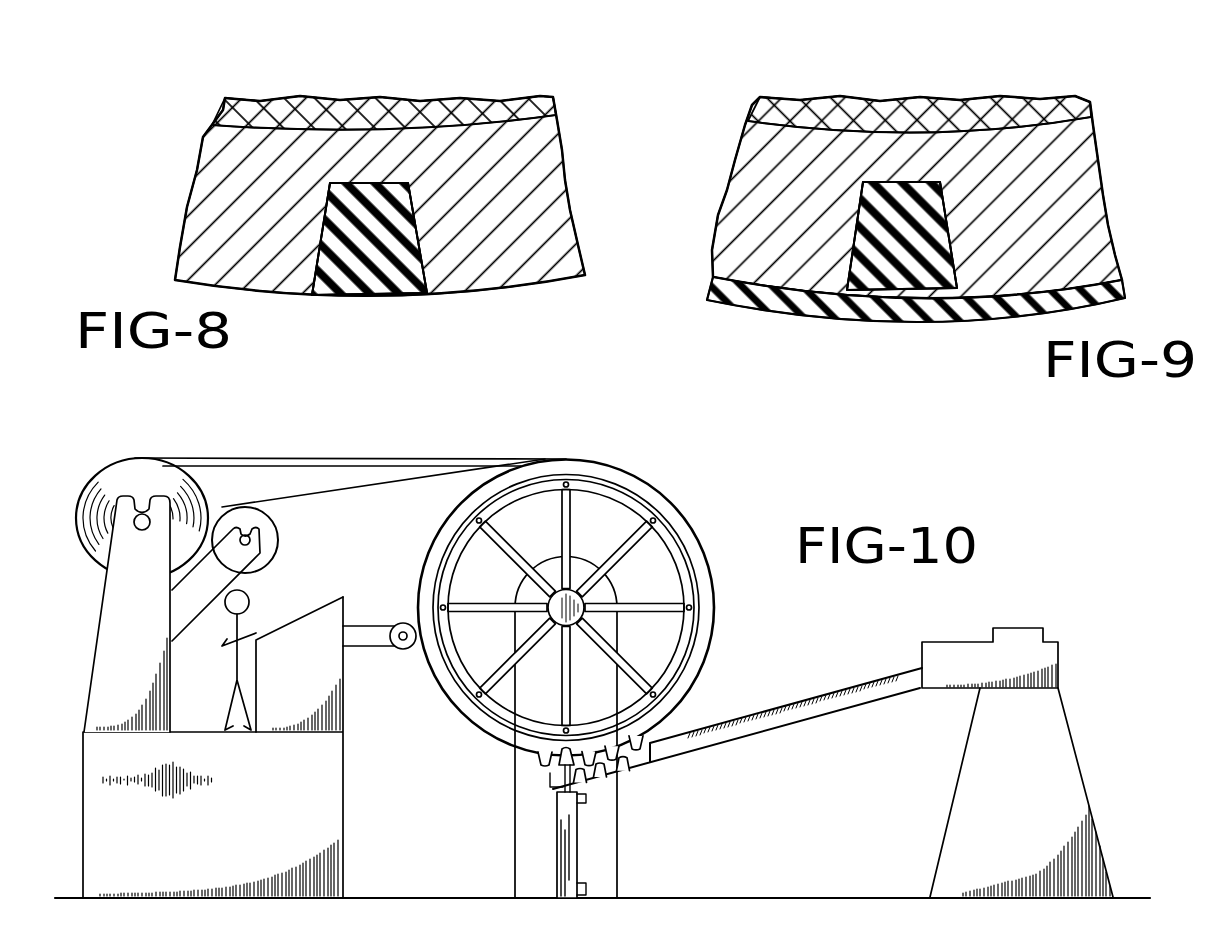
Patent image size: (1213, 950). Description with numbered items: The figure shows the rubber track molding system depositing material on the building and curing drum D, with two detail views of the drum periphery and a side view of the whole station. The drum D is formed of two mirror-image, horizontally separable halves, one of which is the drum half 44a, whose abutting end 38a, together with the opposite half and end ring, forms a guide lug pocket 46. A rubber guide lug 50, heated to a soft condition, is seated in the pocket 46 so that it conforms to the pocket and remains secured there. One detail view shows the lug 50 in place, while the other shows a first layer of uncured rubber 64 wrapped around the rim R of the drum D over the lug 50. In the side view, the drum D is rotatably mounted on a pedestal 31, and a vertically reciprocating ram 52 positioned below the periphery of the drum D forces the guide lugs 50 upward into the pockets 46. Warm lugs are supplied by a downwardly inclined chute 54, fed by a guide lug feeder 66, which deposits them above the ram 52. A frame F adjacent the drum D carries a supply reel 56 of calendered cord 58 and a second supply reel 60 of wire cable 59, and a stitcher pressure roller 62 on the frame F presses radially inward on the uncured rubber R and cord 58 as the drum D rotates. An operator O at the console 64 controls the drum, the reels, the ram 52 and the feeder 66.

In FIG. 9, the abutting end 38a is at (783, 115).
In FIG. 8, the drum half 44a is at (505, 177).
In FIG. 9, the drum half 44a is at (1047, 178).
In FIG. 8, the guide lug pocket 46 is at (420, 268).
In FIG. 9, the guide lug pocket 46 is at (947, 270).
In FIG. 10, the guide lug pocket 46 is at (606, 746).
In FIG. 8, the guide lug 50 is at (337, 281).
In FIG. 9, the guide lug 50 is at (885, 281).
In FIG. 10, the guide lug 50 is at (600, 768).
In FIG. 9, the console 64 is at (1118, 288).
In FIG. 10, the console 64 is at (237, 824).
In FIG. 10, the second supply reel 60 is at (197, 495).
In FIG. 10, the wire cable 59 is at (305, 462).
In FIG. 10, the calendered cord 58 is at (390, 482).
In FIG. 10, the supply reel 56 is at (273, 538).
In FIG. 10, the rim R is at (647, 478).
In FIG. 10, the frame F is at (124, 614).
In FIG. 10, the operator O is at (233, 663).
In FIG. 10, the stitcher pressure roller 62 is at (404, 650).
In FIG. 10, the pedestal 31 is at (537, 847).
In FIG. 10, the building and curing drum D is at (507, 713).
In FIG. 10, the chute 54 is at (800, 720).
In FIG. 10, the ram 52 is at (573, 851).
In FIG. 10, the guide lug feeder 66 is at (1042, 657).